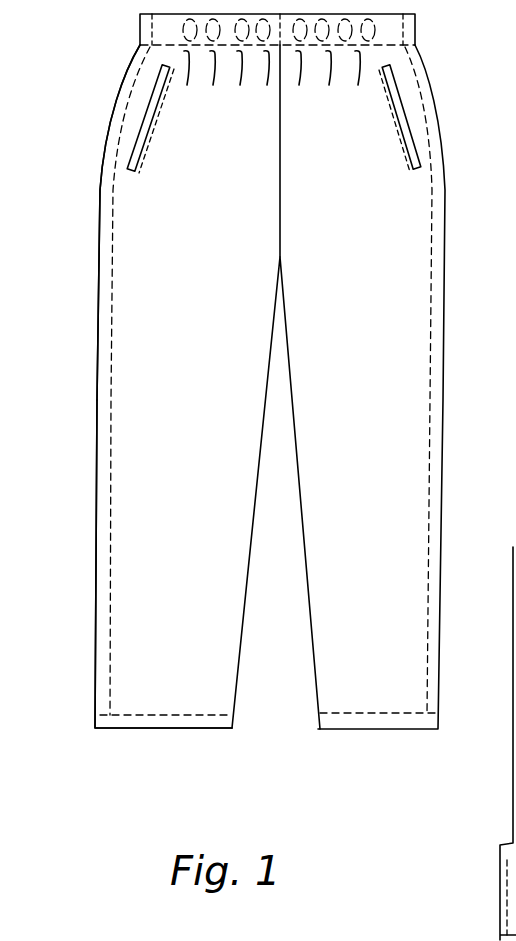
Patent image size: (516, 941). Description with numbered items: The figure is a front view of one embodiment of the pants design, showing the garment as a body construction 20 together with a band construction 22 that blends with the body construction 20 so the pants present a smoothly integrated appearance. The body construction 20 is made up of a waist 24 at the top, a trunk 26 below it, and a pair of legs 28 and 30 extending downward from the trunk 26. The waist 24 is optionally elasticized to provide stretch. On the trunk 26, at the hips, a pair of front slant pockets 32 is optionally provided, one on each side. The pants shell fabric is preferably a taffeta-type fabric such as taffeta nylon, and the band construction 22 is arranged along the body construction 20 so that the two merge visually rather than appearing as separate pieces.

The body construction 20 is at (192, 391).
The band construction 22 is at (95, 473).
The waist 24 is at (418, 28).
The trunk 26 is at (142, 212).
The leg 28 is at (150, 605).
The leg 30 is at (345, 576).
The front slant pockets 32 is at (148, 138).